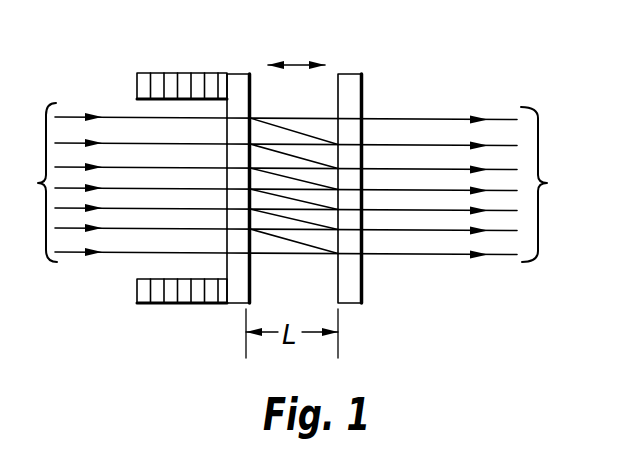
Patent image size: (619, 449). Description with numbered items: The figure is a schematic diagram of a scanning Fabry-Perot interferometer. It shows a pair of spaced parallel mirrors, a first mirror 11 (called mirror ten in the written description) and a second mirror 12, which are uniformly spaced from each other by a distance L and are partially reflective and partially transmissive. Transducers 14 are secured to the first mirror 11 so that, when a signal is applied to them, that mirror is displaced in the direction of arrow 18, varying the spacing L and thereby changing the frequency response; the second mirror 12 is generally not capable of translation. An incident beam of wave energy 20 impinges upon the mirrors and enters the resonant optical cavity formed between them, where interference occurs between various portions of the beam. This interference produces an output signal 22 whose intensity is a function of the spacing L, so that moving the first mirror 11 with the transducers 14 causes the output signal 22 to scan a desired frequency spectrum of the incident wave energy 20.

The first plate (reflecting plate) 11 is at (238, 74).
The mirror 12 is at (357, 74).
The transducers 14 is at (155, 73).
The arrow 18 is at (297, 64).
The incident beam of wave energy 20 is at (117, 182).
The output signal 22 is at (402, 184).